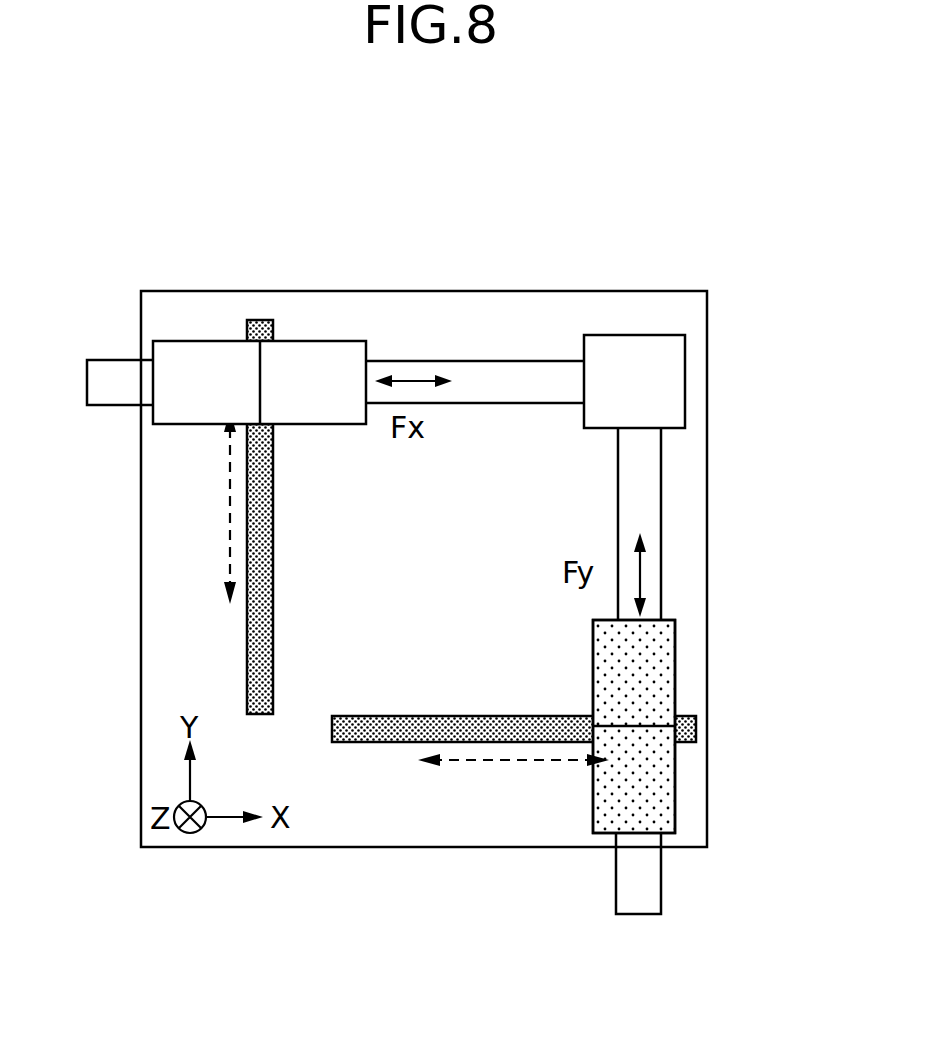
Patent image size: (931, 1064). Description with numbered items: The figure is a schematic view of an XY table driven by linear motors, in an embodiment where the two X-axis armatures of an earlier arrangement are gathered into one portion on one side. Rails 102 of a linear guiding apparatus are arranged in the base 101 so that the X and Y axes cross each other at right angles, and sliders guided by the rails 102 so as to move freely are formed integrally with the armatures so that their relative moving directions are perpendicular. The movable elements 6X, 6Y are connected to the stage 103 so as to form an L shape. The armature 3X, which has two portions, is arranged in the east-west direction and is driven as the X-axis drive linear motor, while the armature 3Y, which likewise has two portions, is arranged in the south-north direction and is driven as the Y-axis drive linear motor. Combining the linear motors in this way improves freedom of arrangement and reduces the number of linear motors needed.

The armature of X-axis drive linear motor 3X is at (291, 355).
The movable element 6X is at (503, 383).
The stage 103 is at (662, 382).
The movable element 6Y is at (646, 497).
The armature of Y-axis drive linear motor 3Y is at (662, 697).
The rail of linear guiding apparatus 102 is at (352, 732).
The base 101 is at (417, 810).